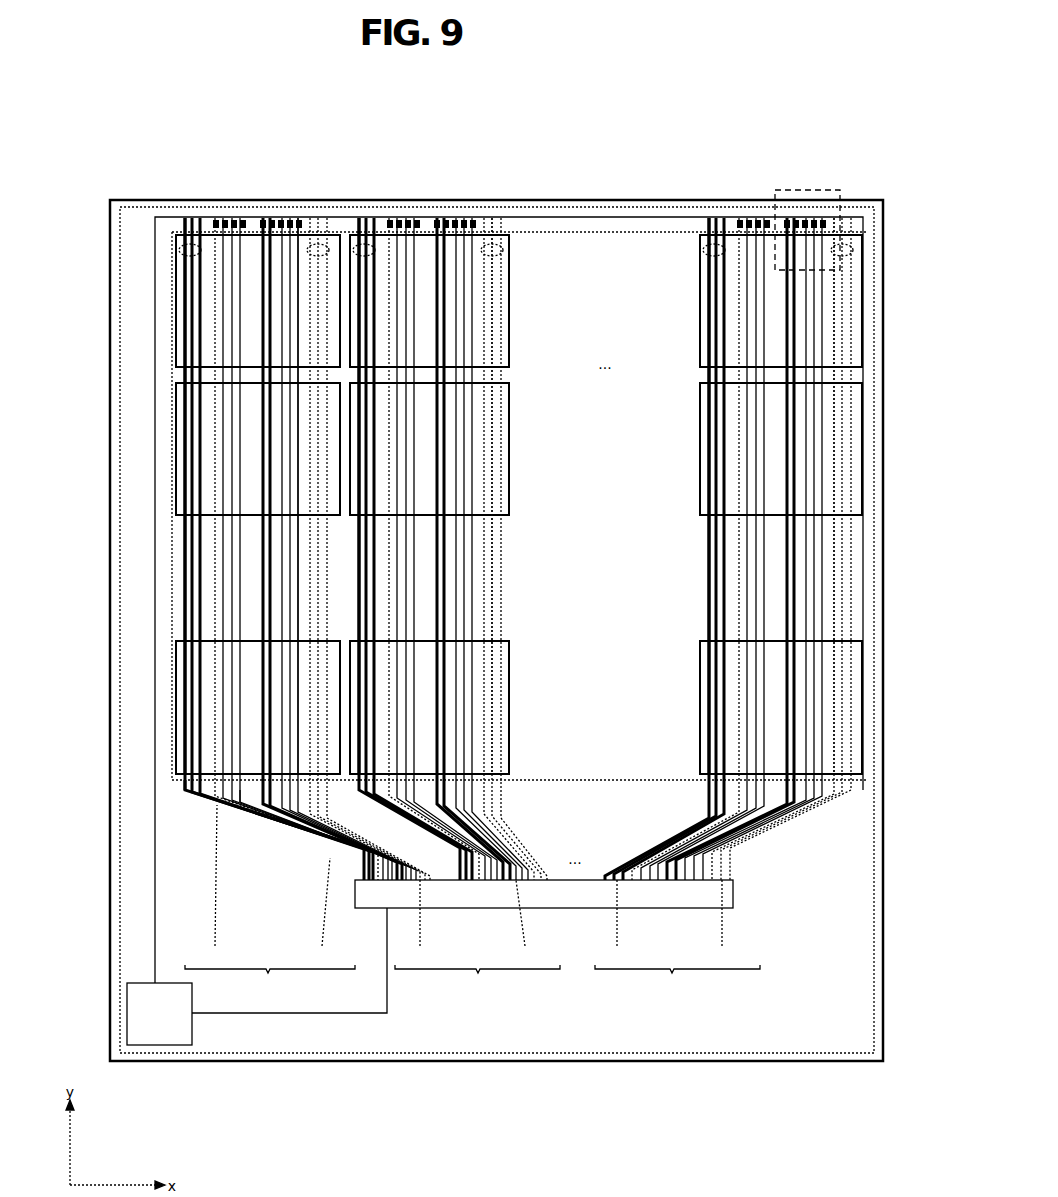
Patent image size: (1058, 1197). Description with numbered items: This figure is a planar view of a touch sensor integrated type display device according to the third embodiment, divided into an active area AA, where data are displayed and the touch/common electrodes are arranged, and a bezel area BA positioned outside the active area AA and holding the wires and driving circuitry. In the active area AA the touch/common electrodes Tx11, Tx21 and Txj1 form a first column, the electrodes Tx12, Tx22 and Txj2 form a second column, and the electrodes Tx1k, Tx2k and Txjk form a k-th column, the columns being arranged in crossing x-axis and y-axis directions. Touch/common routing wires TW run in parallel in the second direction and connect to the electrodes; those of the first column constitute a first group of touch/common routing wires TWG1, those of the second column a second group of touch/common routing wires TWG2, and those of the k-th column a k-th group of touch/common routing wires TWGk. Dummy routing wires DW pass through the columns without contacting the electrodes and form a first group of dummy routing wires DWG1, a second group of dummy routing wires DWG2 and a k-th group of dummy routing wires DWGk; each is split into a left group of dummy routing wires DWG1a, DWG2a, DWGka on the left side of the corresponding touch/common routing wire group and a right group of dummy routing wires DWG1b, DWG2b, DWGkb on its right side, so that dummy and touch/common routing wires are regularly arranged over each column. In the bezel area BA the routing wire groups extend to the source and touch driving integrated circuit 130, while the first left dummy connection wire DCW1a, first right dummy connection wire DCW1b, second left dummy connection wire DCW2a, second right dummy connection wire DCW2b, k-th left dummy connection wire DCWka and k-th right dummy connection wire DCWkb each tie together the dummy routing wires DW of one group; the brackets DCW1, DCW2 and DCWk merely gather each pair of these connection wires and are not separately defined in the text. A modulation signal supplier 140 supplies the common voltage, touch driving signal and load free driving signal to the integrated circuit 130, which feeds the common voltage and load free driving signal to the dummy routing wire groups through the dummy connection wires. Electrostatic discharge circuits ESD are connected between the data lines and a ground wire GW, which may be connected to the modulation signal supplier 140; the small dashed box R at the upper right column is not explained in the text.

The bezel area BA is at (875, 860).
The active area AA is at (875, 290).
The ground wire GW is at (575, 217).
The electrostatic discharge circuits ESD is at (258, 216).
The region R is at (797, 190).
The first group of dummy routing wires DWG1 is at (240, 428).
The first left group of dummy routing wires DWG1a is at (183, 232).
The first right group of dummy routing wires DWG1b is at (303, 232).
The second group of dummy routing wires DWG2 is at (430, 428).
The second left group of dummy routing wires DWG2a is at (360, 232).
The second right group of dummy routing wires DWG2b is at (490, 232).
The k-th group of dummy routing wires DWGk is at (768, 428).
The k-th left group of dummy routing wires DWGka is at (705, 232).
The k-th right group of dummy routing wires DWGkb is at (826, 232).
The touch/common electrode Tx11 is at (258, 301).
The touch/common electrode Tx12 is at (429, 301).
The touch/common electrode Tx1k is at (781, 301).
The touch/common electrode Tx21 is at (258, 449).
The touch/common electrode Tx22 is at (429, 449).
The touch/common electrode Tx2k is at (781, 449).
The touch/common electrode Txj1 is at (258, 707).
The touch/common electrode Txj2 is at (429, 707).
The touch/common electrode Txjk is at (781, 707).
The first group of touch/common routing wires TWG1 is at (320, 845).
The second group of touch/common routing wires TWG2 is at (470, 827).
The k-th group of touch/common routing wires TWGk is at (728, 838).
The dummy routing wires DW is at (190, 802).
The touch/common routing wires TW is at (243, 830).
The source and touch driving integrated circuit 130 is at (570, 908).
The modulation signal supplier 140 is at (257, 976).
The first left dummy connection wire DCW1a is at (215, 885).
The first right dummy connection wire DCW1b is at (322, 912).
The first connection wire group DCW1 is at (270, 981).
The second left dummy connection wire DCW2a is at (418, 923).
The second right dummy connection wire DCW2b is at (525, 923).
The second connection wire group DCW2 is at (477, 981).
The k-th left dummy connection wire DCWka is at (615, 923).
The k-th right dummy connection wire DCWkb is at (722, 923).
The k-th connection wire group DCWk is at (677, 981).